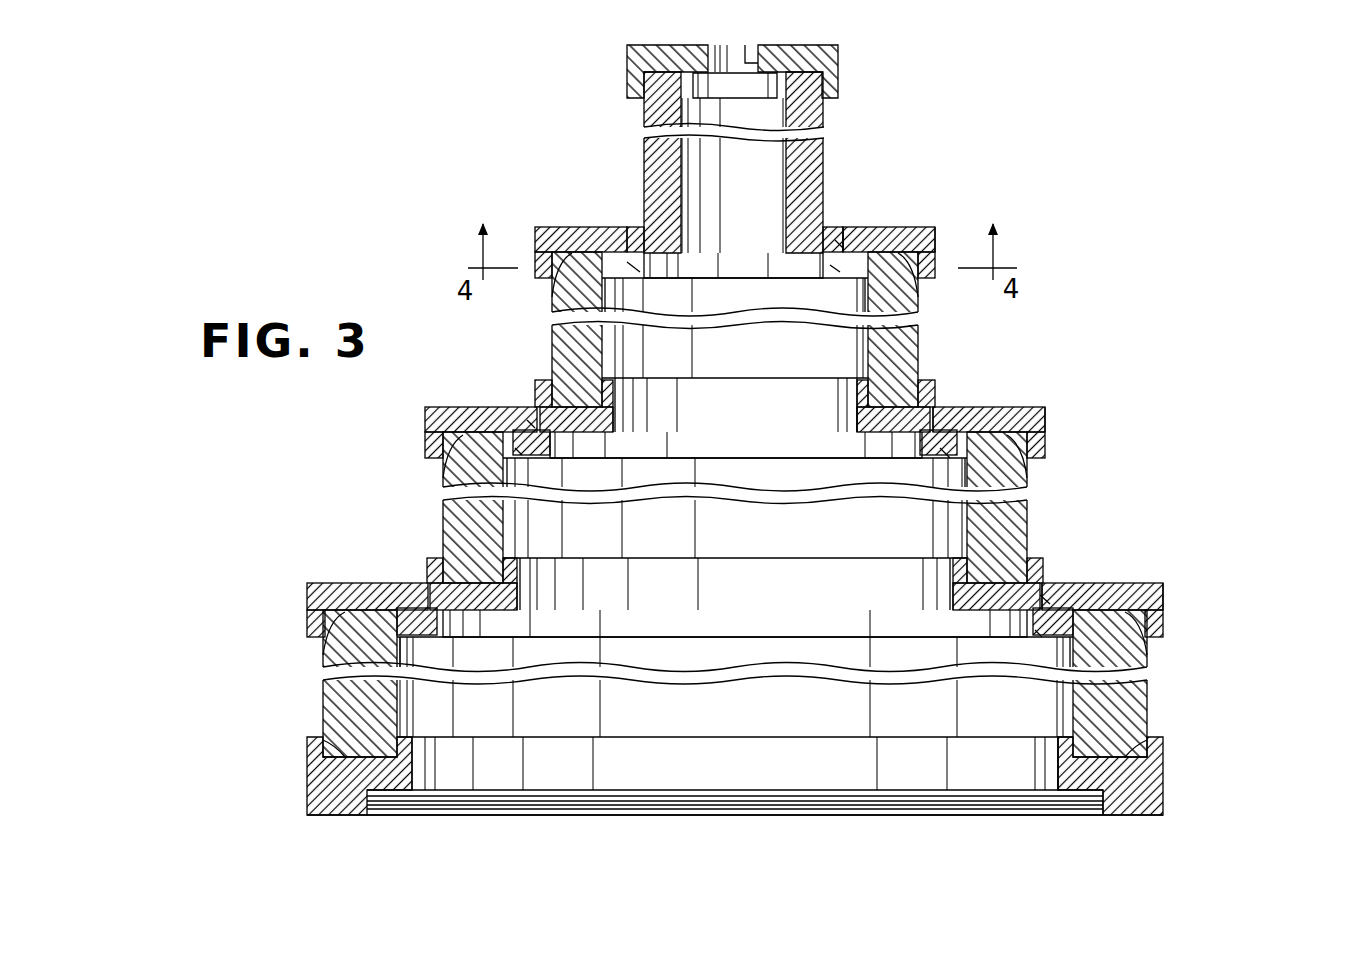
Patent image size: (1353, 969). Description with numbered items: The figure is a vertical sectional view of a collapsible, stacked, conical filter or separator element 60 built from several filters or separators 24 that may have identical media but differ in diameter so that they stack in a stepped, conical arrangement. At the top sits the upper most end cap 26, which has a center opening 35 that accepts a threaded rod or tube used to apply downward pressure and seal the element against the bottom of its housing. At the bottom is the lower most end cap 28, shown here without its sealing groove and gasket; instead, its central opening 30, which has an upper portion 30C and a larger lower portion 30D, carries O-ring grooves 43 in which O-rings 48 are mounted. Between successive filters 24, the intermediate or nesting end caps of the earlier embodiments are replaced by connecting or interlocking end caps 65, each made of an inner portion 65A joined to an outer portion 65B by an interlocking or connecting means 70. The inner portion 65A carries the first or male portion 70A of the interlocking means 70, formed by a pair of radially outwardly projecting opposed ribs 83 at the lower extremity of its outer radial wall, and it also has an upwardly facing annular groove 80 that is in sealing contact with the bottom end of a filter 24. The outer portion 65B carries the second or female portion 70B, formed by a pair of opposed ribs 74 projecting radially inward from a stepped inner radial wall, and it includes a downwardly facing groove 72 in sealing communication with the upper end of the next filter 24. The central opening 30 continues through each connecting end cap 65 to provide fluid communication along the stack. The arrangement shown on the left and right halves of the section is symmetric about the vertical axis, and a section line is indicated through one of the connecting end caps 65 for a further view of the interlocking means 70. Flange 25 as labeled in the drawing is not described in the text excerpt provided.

The filter 24 is at (644, 172).
The coupling flange 25 is at (627, 73).
The upper end cap 26 is at (838, 62).
The lower end cap 28 is at (1170, 766).
The central opening 30 is at (775, 212).
The upper portion of central opening 30C is at (1058, 776).
The lower portion of central opening 30D is at (1080, 806).
The center opening 35 is at (746, 58).
The O-ring groove 43 is at (855, 411).
The O-ring 48 is at (614, 412).
The collapsible stacked conical filter element 60 is at (1207, 229).
The connecting end cap 65 is at (907, 226).
The inner portion of connecting end cap 65A is at (843, 232).
The outer portion of connecting end cap 65B is at (935, 243).
The interlocking means 70 is at (618, 292).
The male portion of interlocking means 70A is at (838, 248).
The female portion of interlocking means 70B is at (838, 272).
The downwardly facing groove 72 is at (552, 297).
The inwardly projecting rib 74 is at (632, 272).
The upwardly facing annular groove 80 is at (1127, 750).
The outwardly projecting rib 83 is at (630, 252).